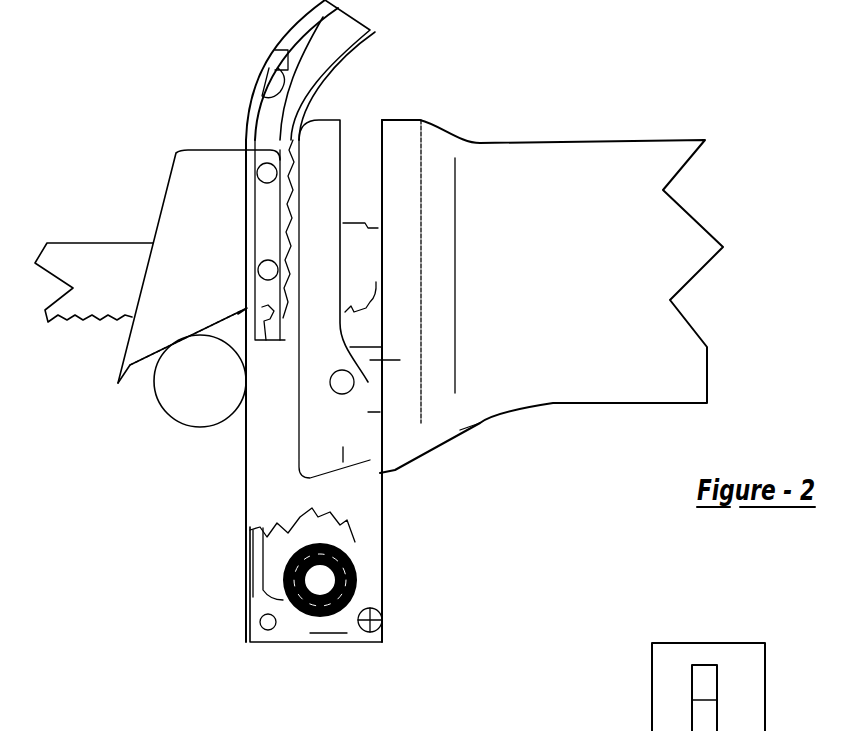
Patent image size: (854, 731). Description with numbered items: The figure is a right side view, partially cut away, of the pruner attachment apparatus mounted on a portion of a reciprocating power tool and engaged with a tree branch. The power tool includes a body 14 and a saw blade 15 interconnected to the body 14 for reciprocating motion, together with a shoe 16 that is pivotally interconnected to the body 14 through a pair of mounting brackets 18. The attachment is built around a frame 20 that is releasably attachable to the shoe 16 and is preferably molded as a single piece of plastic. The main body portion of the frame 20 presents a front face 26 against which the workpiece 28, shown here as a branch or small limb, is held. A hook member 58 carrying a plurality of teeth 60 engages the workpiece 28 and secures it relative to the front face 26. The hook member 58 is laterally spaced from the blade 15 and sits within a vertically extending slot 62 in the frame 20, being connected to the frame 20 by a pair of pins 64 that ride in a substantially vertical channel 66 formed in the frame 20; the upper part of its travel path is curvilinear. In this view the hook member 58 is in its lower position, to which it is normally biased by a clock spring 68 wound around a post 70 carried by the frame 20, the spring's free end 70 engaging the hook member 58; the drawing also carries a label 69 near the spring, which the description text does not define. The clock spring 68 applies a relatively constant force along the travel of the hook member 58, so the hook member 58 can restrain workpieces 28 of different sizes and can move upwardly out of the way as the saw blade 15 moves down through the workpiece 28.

The body 14 is at (567, 157).
The saw blade 15 is at (115, 273).
The shoe 16 is at (328, 140).
The mounting brackets 18 is at (460, 430).
The frame 20 is at (327, 643).
The front face 26 is at (246, 500).
The workpiece 28 is at (182, 395).
The hook member 58 is at (115, 343).
The teeth 60 is at (137, 372).
The slot 62 is at (717, 680).
The pins 64 is at (258, 173).
The channel 66 is at (271, 70).
The clock spring 68 is at (310, 630).
The spiral spring 69 is at (323, 580).
The post 70 is at (255, 340).